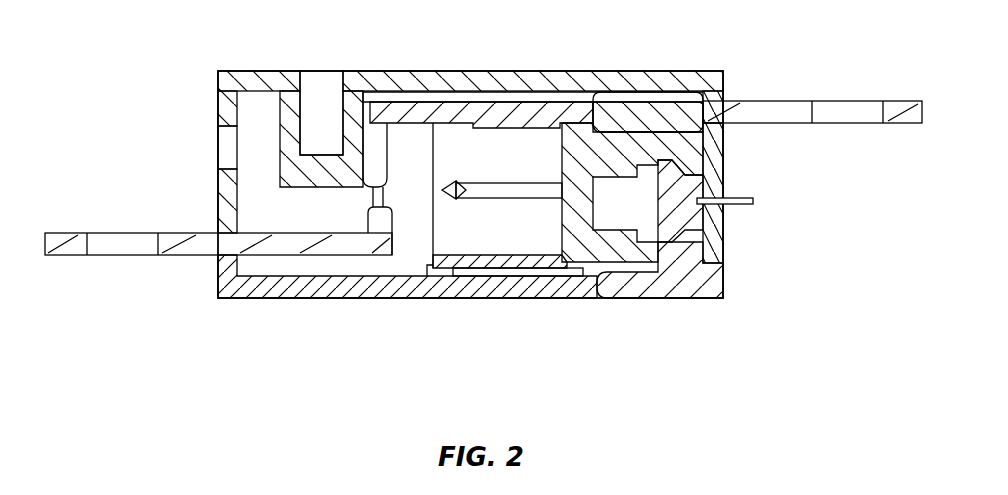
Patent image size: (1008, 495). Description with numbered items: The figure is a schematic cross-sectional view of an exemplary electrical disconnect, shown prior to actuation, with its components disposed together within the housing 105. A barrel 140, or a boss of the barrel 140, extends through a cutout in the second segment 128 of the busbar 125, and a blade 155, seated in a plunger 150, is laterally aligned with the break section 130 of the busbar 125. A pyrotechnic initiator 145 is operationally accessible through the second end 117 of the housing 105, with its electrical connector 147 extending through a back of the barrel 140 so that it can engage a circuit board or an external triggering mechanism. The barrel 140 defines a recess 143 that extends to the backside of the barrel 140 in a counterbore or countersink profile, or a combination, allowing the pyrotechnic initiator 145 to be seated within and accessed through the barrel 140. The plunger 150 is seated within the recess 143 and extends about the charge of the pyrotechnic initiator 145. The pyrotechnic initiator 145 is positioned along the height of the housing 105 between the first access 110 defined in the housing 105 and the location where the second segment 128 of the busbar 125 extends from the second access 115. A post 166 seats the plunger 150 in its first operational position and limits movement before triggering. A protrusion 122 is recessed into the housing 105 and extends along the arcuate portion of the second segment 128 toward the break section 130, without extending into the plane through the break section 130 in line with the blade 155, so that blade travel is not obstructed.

The housing 105 is at (556, 71).
The first access 110 is at (213, 232).
The second access 115 is at (725, 263).
The second end 117 is at (724, 80).
The protrusion 122 is at (330, 88).
The busbar 125 is at (806, 101).
The second segment 128 is at (416, 101).
The break section 130 is at (370, 212).
The barrel 140 is at (676, 84).
The recess 143 is at (697, 299).
The pyrotechnic initiator 145 is at (705, 218).
The electrical connector 147 is at (753, 200).
The plunger 150 is at (567, 278).
The blade 155 is at (480, 198).
The post 166 is at (430, 268).